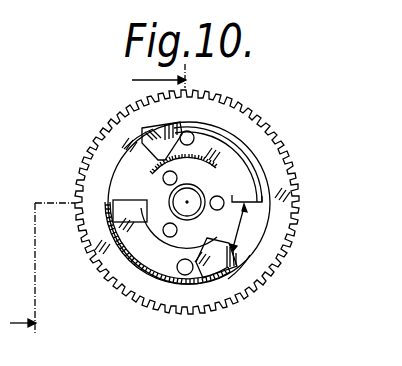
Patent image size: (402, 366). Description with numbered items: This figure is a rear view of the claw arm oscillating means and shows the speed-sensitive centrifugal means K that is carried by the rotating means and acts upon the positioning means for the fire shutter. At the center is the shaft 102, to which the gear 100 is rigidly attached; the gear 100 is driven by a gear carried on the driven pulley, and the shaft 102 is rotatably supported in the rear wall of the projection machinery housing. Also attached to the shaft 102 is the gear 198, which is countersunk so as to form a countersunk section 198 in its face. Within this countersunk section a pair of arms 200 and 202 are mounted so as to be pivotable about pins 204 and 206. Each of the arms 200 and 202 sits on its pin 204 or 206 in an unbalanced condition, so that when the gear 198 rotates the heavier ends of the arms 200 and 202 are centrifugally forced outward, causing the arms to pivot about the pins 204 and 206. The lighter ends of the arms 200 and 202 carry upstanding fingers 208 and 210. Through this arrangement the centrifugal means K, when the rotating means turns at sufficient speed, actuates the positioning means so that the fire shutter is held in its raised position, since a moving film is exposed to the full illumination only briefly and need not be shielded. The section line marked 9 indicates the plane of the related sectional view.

The section line 9- 9 is at (93, 198).
The gear 100 is at (284, 148).
The shaft 102 is at (177, 198).
The gear 198 is at (110, 174).
The arm 200 is at (225, 145).
The arm 202 is at (143, 257).
The pin 204 is at (194, 119).
The pin 206 is at (187, 274).
The upstanding finger 208 is at (148, 138).
The upstanding finger 210 is at (245, 277).
The speed-sensitive centrifugal means K is at (239, 227).